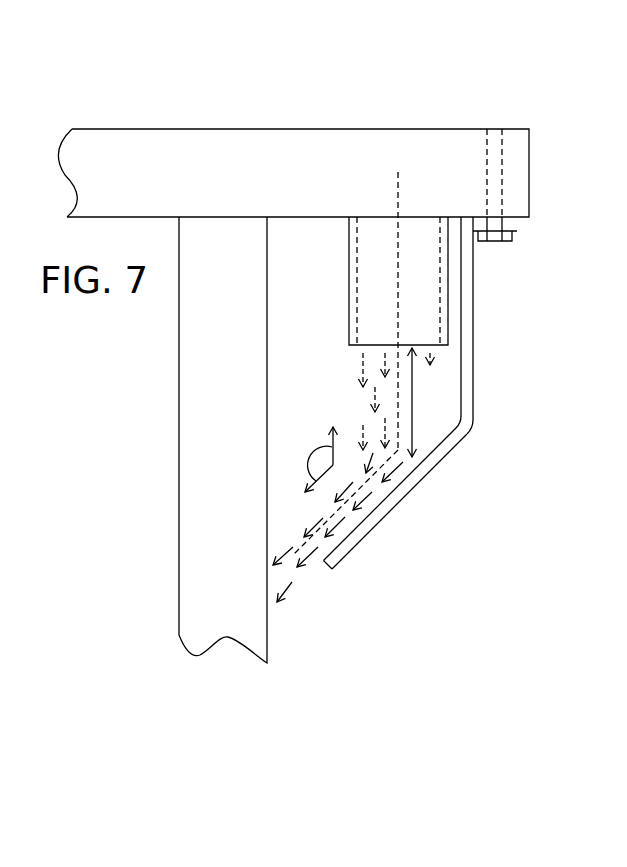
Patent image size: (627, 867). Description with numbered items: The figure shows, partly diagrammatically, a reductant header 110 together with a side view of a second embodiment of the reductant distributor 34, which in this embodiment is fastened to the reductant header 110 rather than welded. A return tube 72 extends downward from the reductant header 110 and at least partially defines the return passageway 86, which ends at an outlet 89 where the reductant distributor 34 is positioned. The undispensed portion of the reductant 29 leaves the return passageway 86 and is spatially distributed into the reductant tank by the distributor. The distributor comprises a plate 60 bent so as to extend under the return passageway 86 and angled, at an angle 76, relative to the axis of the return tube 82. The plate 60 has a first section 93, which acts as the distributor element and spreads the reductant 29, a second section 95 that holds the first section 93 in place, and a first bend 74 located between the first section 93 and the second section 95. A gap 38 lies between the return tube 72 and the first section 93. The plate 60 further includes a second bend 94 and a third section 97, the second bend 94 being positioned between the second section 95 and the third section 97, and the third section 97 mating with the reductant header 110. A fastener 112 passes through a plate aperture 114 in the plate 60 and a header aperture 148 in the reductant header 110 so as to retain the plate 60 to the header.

The reductant header 110 is at (330, 108).
The return tube axis 82 is at (398, 197).
The return passageway 86 is at (359, 246).
The return tube 72 is at (372, 305).
The outlet 89 is at (373, 356).
The gap 38 is at (412, 420).
The angle 76 is at (320, 450).
The reductant 29 is at (302, 590).
The header aperture 148 is at (503, 172).
The third section 97 is at (516, 227).
The plate aperture 114 is at (518, 238).
The fastener 112 is at (497, 243).
The second bend 94 is at (464, 232).
The second section 95 is at (473, 384).
The first bend 74 is at (470, 430).
The plate 60 is at (441, 499).
The reductant distributor 34 is at (461, 463).
The first section 93 is at (356, 549).